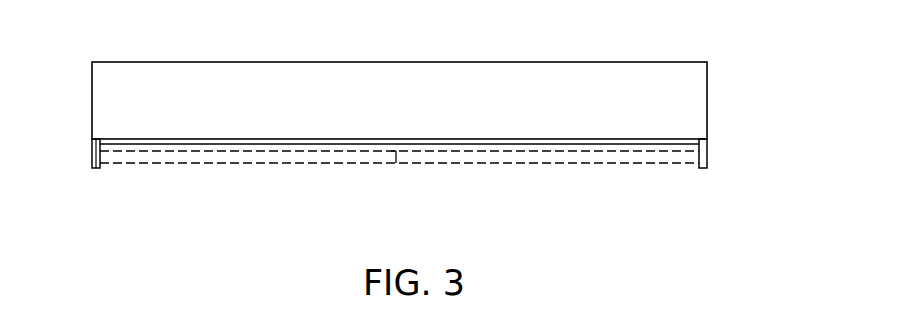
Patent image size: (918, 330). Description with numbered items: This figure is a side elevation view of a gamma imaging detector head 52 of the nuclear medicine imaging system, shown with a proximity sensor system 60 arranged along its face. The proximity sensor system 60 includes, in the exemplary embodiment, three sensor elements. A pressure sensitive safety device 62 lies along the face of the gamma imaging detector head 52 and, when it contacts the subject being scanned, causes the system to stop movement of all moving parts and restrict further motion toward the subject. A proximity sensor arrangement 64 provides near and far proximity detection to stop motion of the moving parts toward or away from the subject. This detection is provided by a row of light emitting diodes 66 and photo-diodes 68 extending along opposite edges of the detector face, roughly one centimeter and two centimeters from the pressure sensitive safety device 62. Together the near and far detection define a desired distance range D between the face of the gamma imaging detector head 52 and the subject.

The gamma imaging detector head 52 is at (615, 62).
The proximity sensor system 60 is at (158, 171).
The pressure sensitive safety device 62 is at (364, 139).
The proximity sensor arrangement 64 is at (84, 153).
The light emitting diodes 66 is at (92, 161).
The photo-diodes 68 is at (707, 154).
The distance range D is at (392, 163).